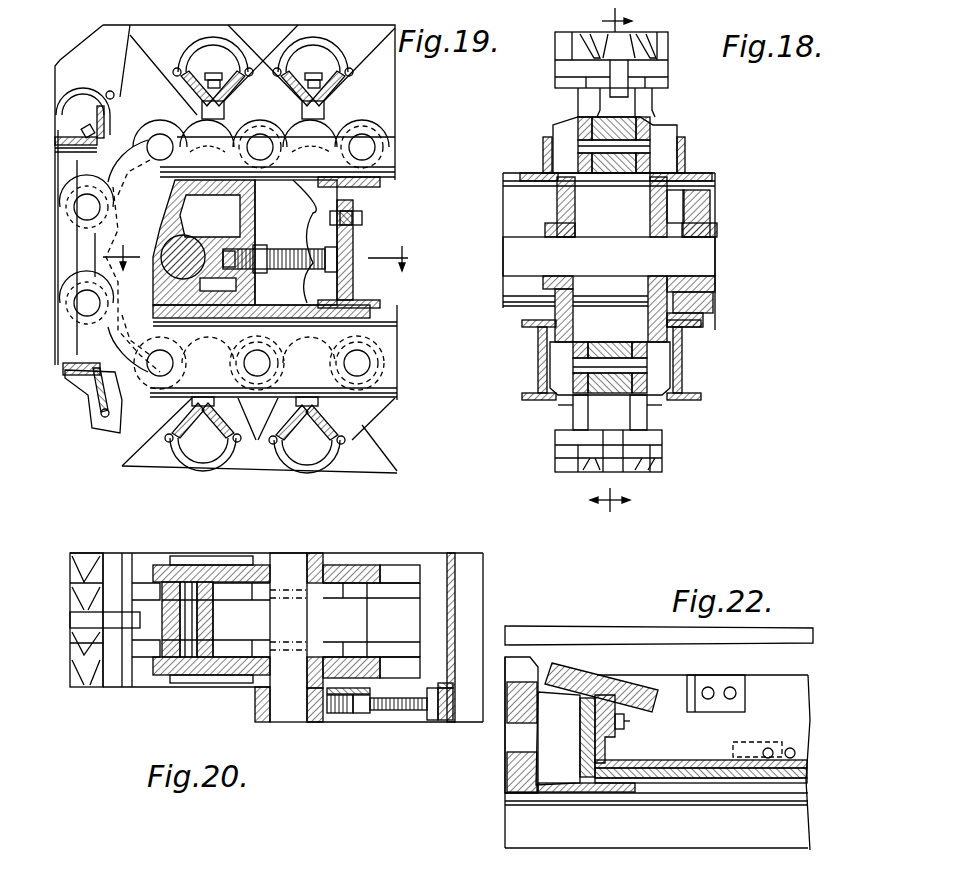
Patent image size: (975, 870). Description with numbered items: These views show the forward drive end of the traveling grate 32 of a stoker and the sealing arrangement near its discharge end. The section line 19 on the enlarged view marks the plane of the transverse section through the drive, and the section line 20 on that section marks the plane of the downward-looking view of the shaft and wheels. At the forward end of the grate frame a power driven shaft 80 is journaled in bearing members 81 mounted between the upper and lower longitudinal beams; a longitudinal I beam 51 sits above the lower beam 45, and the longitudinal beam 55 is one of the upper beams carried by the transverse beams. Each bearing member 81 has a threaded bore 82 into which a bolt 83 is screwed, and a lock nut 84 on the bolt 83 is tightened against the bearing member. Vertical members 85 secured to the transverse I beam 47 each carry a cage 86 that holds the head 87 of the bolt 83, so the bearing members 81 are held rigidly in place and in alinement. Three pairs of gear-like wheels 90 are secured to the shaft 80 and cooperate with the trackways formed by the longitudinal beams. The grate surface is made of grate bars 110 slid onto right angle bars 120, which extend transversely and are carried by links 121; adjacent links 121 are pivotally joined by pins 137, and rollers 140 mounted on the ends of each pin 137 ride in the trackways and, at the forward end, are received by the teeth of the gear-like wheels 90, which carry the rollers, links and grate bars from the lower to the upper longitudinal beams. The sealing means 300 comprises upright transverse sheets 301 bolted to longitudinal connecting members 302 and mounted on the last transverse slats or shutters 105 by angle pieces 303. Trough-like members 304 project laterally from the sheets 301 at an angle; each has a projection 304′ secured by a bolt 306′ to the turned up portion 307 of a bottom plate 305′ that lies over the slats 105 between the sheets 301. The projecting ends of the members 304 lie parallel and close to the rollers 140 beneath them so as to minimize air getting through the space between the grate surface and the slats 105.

In FIG. 18, the section line 19— 19 is at (605, 268).
In FIG. 19, the section line 20— 20 is at (267, 250).
In FIG. 19, the traveling grate 32 is at (392, 110).
In FIG. 18, the traveling grate 32 is at (536, 80).
In FIG. 18, the longitudinal beam 45 is at (684, 383).
In FIG. 19, the transverse I beam 47 is at (362, 206).
In FIG. 20, the transverse I beam 47 is at (452, 556).
In FIG. 18, the longitudinal I beam 51 is at (686, 162).
In FIG. 22, the longitudinal beam 55 is at (602, 793).
In FIG. 19, the power driven shaft 80 is at (170, 225).
In FIG. 18, the power driven shaft 80 is at (717, 257).
In FIG. 20, the power driven shaft 80 is at (292, 553).
In FIG. 19, the bearing member 81 is at (257, 222).
In FIG. 18, the bearing member 81 is at (712, 210).
In FIG. 20, the bearing member 81 is at (316, 720).
In FIG. 19, the threaded bore 82 is at (238, 270).
In FIG. 20, the threaded bore 82 is at (333, 720).
In FIG. 19, the bolt 83 is at (295, 270).
In FIG. 20, the bolt 83 is at (396, 712).
In FIG. 19, the lock nut 84 is at (261, 245).
In FIG. 20, the lock nut 84 is at (342, 715).
In FIG. 19, the vertical member 85 is at (362, 226).
In FIG. 20, the vertical member 85 is at (450, 712).
In FIG. 19, the cage 86 is at (353, 290).
In FIG. 20, the cage 86 is at (444, 722).
In FIG. 19, the bolt head 87 is at (345, 258).
In FIG. 20, the bolt head 87 is at (431, 720).
In FIG. 19, the gear-like wheel 90 is at (93, 383).
In FIG. 18, the gear-like wheel 90 is at (650, 222).
In FIG. 20, the gear-like wheel 90 is at (231, 565).
In FIG. 22, the transverse slat 105 is at (808, 780).
In FIG. 19, the grate bar 110 is at (147, 455).
In FIG. 18, the grate bar 110 is at (662, 48).
In FIG. 20, the grate bar 110 is at (88, 688).
In FIG. 19, the right angle bar 120 is at (220, 424).
In FIG. 19, the link 121 is at (254, 405).
In FIG. 18, the link 121 is at (620, 410).
In FIG. 18, the pin 137 is at (585, 135).
In FIG. 20, the pin 137 is at (175, 657).
In FIG. 19, the roller 140 is at (380, 135).
In FIG. 18, the roller 140 is at (660, 125).
In FIG. 20, the roller 140 is at (197, 670).
In FIG. 22, the roller 140 is at (558, 770).
In FIG. 22, the sealing means 300 is at (622, 626).
In FIG. 22, the upright transverse sheet 301 is at (745, 677).
In FIG. 22, the longitudinal connecting member 302 is at (712, 680).
In FIG. 22, the angle piece 303 is at (797, 750).
In FIG. 22, the trough-like member 304 is at (550, 666).
In FIG. 22, the projection 304′ is at (615, 735).
In FIG. 22, the bottom plate 305′ is at (706, 766).
In FIG. 22, the bolt 306′ is at (630, 721).
In FIG. 22, the turned up portion 307 is at (565, 738).